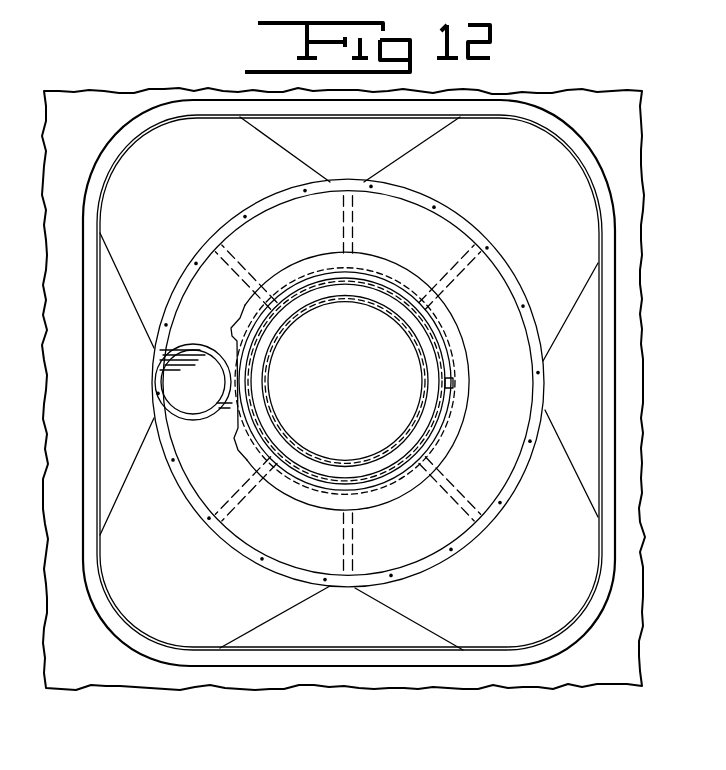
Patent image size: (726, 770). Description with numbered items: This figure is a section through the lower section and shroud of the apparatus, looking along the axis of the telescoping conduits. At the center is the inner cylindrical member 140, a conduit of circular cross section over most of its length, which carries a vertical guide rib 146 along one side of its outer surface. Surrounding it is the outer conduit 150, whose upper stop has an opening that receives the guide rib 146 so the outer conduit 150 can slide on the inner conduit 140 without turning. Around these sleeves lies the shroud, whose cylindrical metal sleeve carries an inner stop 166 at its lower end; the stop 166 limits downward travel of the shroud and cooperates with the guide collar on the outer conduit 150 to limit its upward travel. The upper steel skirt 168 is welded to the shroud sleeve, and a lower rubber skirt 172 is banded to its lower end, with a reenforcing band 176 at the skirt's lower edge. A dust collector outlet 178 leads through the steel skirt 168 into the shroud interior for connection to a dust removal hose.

The inner cylindrical member 140 is at (403, 437).
The vertical guide rib 146 is at (428, 380).
The outer conduit 150 is at (433, 342).
The inner stop 166 is at (453, 380).
The upper steel skirt 168 is at (482, 280).
The lower rubber skirt 172 is at (548, 158).
The reenforcing band 176 is at (612, 268).
The dust collector outlet 178 is at (227, 408).